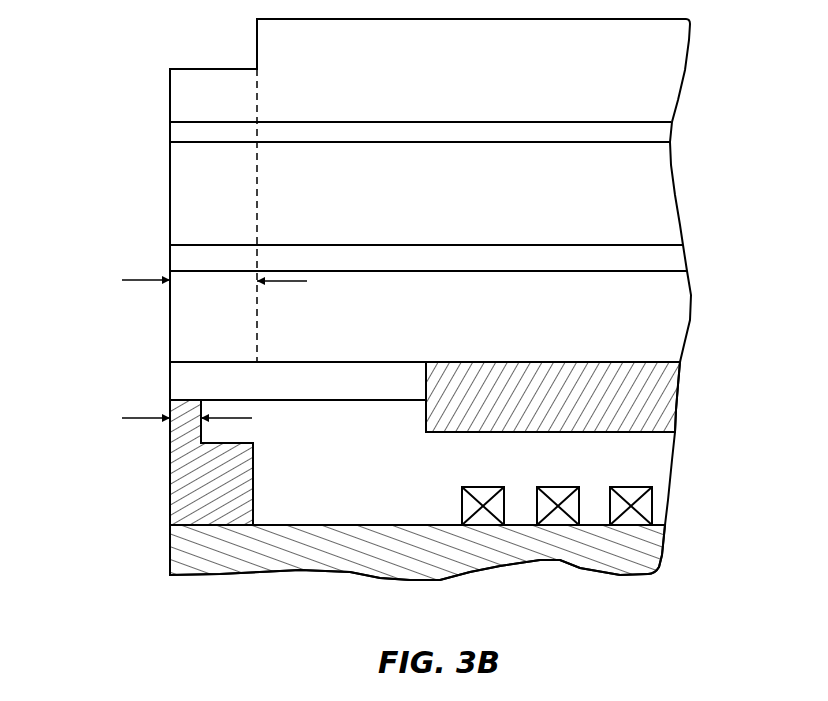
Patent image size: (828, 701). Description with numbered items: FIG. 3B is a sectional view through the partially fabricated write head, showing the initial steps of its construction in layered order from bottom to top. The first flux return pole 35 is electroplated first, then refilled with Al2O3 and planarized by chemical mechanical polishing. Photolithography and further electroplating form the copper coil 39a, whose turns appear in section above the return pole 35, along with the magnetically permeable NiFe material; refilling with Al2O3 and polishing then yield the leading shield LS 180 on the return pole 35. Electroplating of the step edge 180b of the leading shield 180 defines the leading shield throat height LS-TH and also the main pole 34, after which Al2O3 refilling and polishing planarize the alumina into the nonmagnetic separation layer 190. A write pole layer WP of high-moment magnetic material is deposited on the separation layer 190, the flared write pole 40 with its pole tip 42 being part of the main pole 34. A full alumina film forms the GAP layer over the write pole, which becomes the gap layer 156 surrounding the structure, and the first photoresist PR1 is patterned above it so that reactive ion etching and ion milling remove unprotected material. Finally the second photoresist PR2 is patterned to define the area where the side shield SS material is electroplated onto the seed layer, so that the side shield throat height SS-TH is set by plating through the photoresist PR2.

The side shield SS is at (182, 92).
The gap layer 156 is at (181, 134).
The second photoresist layer PR2 is at (662, 98).
The first photoresist layer PR1 is at (657, 215).
The gap layer GAP is at (672, 263).
The side shield throat height SS-TH is at (176, 280).
The pole tip 42 is at (183, 323).
The write pole 40 is at (675, 313).
The write pole WP is at (673, 347).
The nonmagnetic separation layer 190 is at (178, 368).
The alumina refill Al2O3 is at (177, 393).
The main pole 34 is at (668, 387).
The leading shield throat height LS-TH is at (108, 420).
The step edge 180b is at (243, 440).
The leading shield 180 is at (176, 475).
The coil 39a is at (650, 479).
The first flux return pole 35 is at (181, 552).